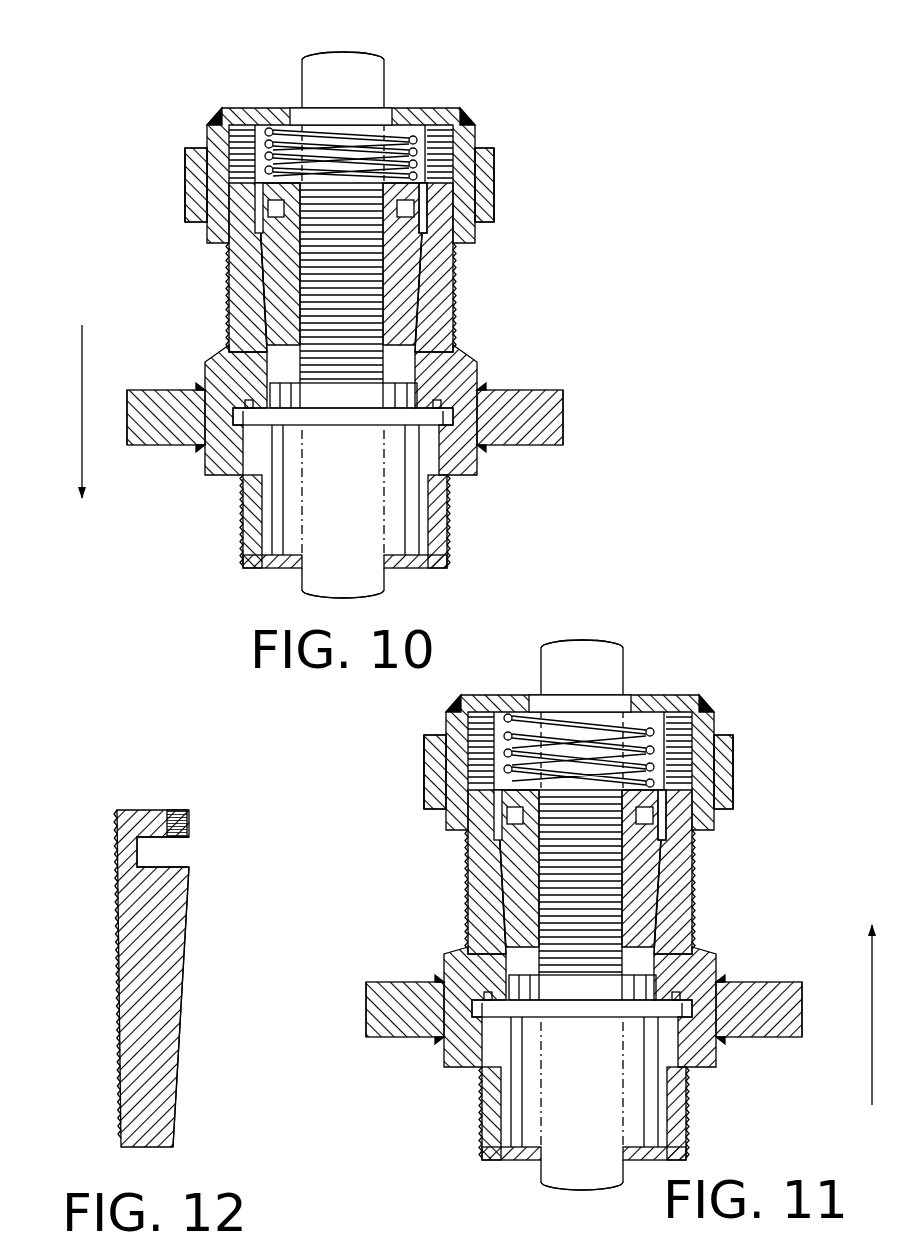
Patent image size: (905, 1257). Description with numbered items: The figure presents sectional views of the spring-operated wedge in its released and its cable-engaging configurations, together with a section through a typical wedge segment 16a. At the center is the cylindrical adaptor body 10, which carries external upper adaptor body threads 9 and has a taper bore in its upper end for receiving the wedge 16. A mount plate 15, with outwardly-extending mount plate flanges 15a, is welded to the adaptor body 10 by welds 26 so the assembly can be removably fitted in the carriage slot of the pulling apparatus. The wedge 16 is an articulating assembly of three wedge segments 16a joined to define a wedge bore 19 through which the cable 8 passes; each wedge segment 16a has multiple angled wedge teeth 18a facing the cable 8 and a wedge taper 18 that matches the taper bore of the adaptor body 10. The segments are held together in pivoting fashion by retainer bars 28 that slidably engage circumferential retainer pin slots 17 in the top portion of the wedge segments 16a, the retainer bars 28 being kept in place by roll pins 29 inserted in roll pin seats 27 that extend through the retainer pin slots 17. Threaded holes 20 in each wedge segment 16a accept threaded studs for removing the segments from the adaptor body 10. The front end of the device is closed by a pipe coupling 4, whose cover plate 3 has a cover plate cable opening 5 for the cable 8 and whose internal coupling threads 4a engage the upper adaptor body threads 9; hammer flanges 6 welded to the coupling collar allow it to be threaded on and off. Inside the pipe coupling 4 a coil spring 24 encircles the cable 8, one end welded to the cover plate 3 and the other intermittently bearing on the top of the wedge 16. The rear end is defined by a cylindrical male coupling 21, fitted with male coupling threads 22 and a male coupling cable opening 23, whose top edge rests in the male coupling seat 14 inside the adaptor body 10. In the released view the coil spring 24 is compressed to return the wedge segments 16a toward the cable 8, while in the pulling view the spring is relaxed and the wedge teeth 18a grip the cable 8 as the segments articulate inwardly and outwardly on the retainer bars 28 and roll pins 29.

In FIG. 10, the cover plate 3 is at (432, 108).
In FIG. 11, the cover plate 3 is at (670, 695).
In FIG. 10, the pipe coupling 4 is at (483, 132).
In FIG. 11, the pipe coupling 4 is at (723, 719).
In FIG. 10, the internal coupling threads 4a is at (125, 222).
In FIG. 11, the internal coupling threads 4a is at (362, 752).
In FIG. 10, the cover plate cable opening 5 is at (325, 108).
In FIG. 11, the cover plate cable opening 5 is at (565, 697).
In FIG. 10, the hammer flanges 6 is at (487, 168).
In FIG. 11, the hammer flanges 6 is at (727, 757).
In FIG. 10, the cable 8 is at (298, 52).
In FIG. 11, the cable 8 is at (586, 642).
In FIG. 10, the upper adaptor body threads 9 is at (228, 258).
In FIG. 11, the upper adaptor body threads 9 is at (468, 842).
In FIG. 10, the adaptor body 10 is at (220, 349).
In FIG. 11, the adaptor body 10 is at (460, 941).
In FIG. 10, the male coupling seat 14 is at (249, 410).
In FIG. 11, the male coupling seat 14 is at (488, 1002).
In FIG. 10, the mount plate 15 is at (539, 382).
In FIG. 11, the mount plate 15 is at (779, 977).
In FIG. 10, the mount plate flanges 15a is at (135, 400).
In FIG. 11, the mount plate flanges 15a is at (372, 990).
In FIG. 10, the wedge 16 is at (420, 262).
In FIG. 11, the wedge 16 is at (660, 850).
In FIG. 10, the wedge segments 16a is at (386, 232).
In FIG. 11, the wedge segments 16a is at (625, 848).
In FIG. 12, the wedge segments 16a is at (170, 943).
In FIG. 10, the retainer pin slots 17 is at (255, 203).
In FIG. 11, the retainer pin slots 17 is at (494, 810).
In FIG. 12, the retainer pin slots 17 is at (137, 852).
In FIG. 10, the wedge taper 18 is at (341, 264).
In FIG. 11, the wedge taper 18 is at (580, 868).
In FIG. 12, the wedge taper 18 is at (180, 1060).
In FIG. 10, the wedge teeth 18a is at (384, 272).
In FIG. 11, the wedge teeth 18a is at (624, 954).
In FIG. 12, the wedge teeth 18a is at (117, 950).
In FIG. 10, the wedge bore 19 is at (328, 362).
In FIG. 11, the wedge bore 19 is at (564, 952).
In FIG. 12, the threaded holes 20 is at (173, 810).
In FIG. 10, the male coupling 21 is at (449, 552).
In FIG. 11, the male coupling 21 is at (688, 1145).
In FIG. 10, the male coupling threads 22 is at (458, 512).
In FIG. 11, the male coupling threads 22 is at (688, 1105).
In FIG. 10, the male coupling cable opening 23 is at (330, 560).
In FIG. 11, the male coupling cable opening 23 is at (570, 1152).
In FIG. 10, the coil spring 24 is at (262, 118).
In FIG. 11, the coil spring 24 is at (503, 705).
In FIG. 10, the welds 26 is at (458, 112).
In FIG. 11, the welds 26 is at (698, 700).
In FIG. 10, the roll pin seats 27 is at (265, 212).
In FIG. 11, the roll pin seats 27 is at (505, 814).
In FIG. 10, the retainer bars 28 is at (440, 218).
In FIG. 11, the retainer bars 28 is at (680, 810).
In FIG. 10, the roll pins 29 is at (420, 200).
In FIG. 11, the roll pins 29 is at (660, 792).